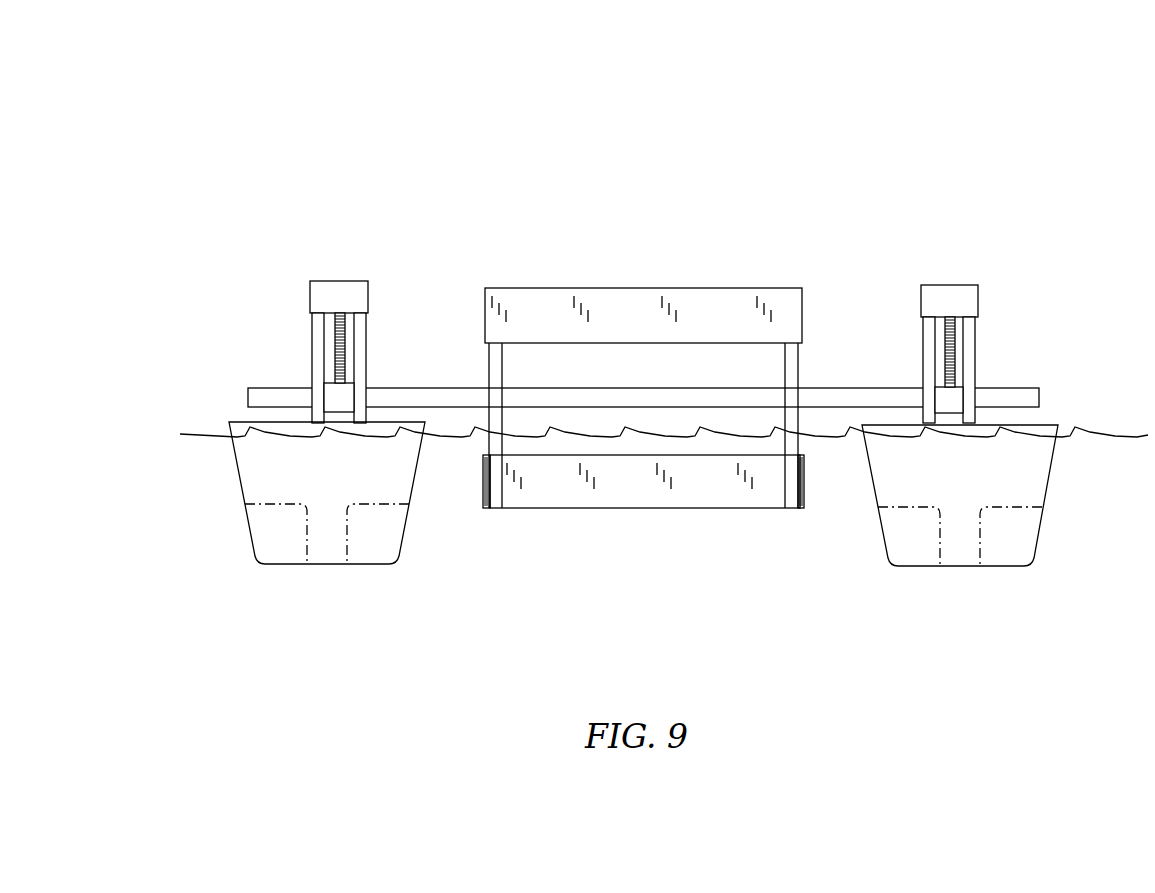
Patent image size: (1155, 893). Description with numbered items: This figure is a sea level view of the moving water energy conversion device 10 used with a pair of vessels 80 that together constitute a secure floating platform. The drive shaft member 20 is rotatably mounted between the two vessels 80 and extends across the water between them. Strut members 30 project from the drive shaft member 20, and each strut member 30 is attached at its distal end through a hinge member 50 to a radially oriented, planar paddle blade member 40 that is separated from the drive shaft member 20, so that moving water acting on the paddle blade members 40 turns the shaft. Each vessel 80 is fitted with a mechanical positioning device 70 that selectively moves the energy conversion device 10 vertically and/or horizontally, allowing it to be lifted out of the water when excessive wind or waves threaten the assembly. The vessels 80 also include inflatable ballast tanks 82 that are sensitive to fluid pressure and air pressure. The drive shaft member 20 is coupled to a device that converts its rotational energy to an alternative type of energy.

The moving water energy conversion device 10 is at (920, 130).
The drive shaft member 20 is at (278, 387).
The strut member 30 is at (505, 377).
The paddle blade member 40 is at (640, 313).
The hinge member 50 is at (482, 508).
The mechanical positioning device 70 is at (308, 293).
The vessel 80 is at (644, 548).
The inflatable ballast tank 82 is at (373, 553).